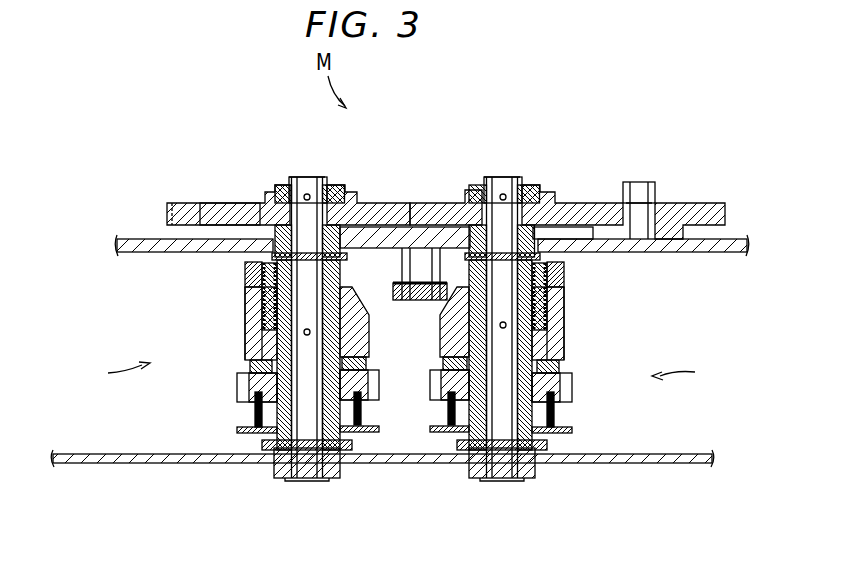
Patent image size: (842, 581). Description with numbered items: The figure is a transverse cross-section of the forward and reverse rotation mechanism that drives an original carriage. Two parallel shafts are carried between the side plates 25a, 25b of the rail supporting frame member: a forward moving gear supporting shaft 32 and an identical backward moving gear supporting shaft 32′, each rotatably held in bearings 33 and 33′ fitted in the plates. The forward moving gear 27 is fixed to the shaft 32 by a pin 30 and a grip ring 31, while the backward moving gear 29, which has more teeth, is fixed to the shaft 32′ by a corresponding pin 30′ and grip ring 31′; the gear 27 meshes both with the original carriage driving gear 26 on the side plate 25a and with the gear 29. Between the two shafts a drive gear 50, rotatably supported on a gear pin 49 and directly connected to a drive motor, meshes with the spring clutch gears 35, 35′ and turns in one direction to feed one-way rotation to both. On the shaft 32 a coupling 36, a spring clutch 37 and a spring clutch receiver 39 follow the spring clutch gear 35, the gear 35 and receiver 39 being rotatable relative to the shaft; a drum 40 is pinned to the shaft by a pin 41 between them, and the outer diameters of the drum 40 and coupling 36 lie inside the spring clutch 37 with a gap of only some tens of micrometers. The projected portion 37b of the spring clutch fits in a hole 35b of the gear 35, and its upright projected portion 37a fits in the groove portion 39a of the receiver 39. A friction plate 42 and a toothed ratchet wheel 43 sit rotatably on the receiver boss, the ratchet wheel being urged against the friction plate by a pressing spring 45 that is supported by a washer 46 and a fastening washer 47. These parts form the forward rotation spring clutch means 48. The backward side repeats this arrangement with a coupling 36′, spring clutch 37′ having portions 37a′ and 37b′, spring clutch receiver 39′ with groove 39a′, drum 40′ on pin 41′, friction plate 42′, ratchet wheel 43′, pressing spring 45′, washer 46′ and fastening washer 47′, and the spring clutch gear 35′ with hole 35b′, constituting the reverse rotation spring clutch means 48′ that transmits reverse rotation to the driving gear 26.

The side plate 25a is at (735, 242).
The side plate 25b is at (660, 464).
The original carriage driving gear 26 is at (690, 215).
The forward moving gear 27 is at (545, 200).
The backward moving gear 29 is at (185, 212).
The pin 30 is at (510, 194).
The pin 30′ is at (305, 194).
The grip ring 31 is at (478, 192).
The grip ring 31′ is at (333, 190).
The forward moving gear supporting shaft 32 is at (503, 178).
The backward moving gear supporting shaft 32′ is at (314, 178).
The bearing 33 is at (522, 470).
The bearing 33′ is at (282, 470).
The spring clutch gear 35 is at (450, 205).
The spring clutch gear 35′ is at (368, 205).
The hole 35b is at (564, 272).
The hole 35b′ is at (246, 272).
The coupling 36 is at (530, 300).
The coupling 36′ is at (279, 300).
The spring clutch 37 is at (450, 330).
The spring clutch 37′ is at (360, 325).
The upright projected portion 37a is at (565, 333).
The upright projected portion 37a′ is at (246, 333).
The projected portion 37b is at (590, 210).
The projected portion 37b′ is at (240, 212).
The spring clutch receiver 39 is at (556, 350).
The spring clutch receiver 39′ is at (255, 350).
The groove portion 39a is at (550, 318).
The groove portion 39a′ is at (256, 318).
The drum 40 is at (442, 362).
The drum 40′ is at (366, 364).
The pin 41 is at (503, 330).
The pin 41′ is at (306, 329).
The friction plate 42 is at (556, 366).
The friction plate 42′ is at (252, 366).
The ratchet wheel 43 is at (566, 388).
The ratchet wheel 43′ is at (240, 388).
The pressing spring 45 is at (554, 408).
The pressing spring 45′ is at (254, 408).
The washer 46 is at (562, 430).
The washer 46′ is at (246, 430).
The fastening washer 47 is at (540, 446).
The fastening washer 47′ is at (270, 446).
The forward rotation spring clutch means 48 is at (687, 367).
The reverse rotation spring clutch means 48′ is at (114, 367).
The gear pin 49 is at (420, 250).
The drive gear 50 is at (390, 235).